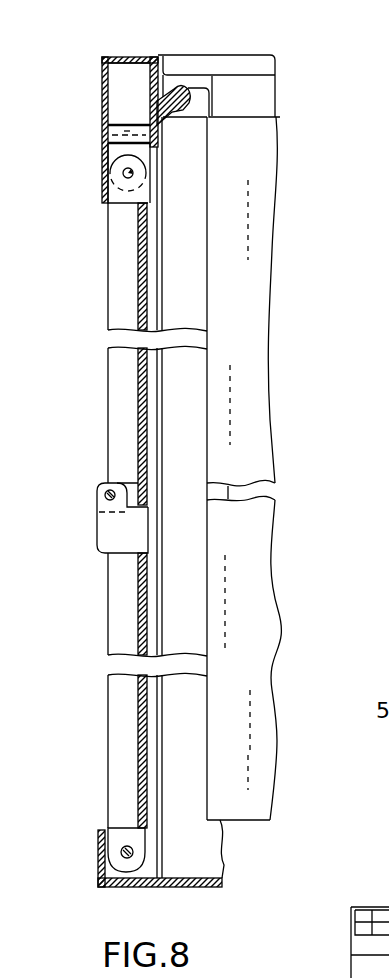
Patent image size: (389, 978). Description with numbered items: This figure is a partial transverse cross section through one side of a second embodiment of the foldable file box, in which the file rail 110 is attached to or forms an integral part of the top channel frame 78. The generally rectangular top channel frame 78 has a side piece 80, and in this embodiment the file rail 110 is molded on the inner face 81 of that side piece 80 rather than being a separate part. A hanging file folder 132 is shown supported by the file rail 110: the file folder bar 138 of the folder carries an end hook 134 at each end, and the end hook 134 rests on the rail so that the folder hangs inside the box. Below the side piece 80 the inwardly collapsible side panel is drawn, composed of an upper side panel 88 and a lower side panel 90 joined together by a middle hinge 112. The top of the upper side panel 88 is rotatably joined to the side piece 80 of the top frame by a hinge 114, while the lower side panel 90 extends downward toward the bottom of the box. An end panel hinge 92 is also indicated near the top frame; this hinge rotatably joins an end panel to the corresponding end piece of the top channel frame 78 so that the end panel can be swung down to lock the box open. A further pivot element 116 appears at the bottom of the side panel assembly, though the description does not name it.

The top channel frame 78 is at (95, 54).
The side piece 80 is at (98, 94).
The inner face 81 is at (169, 61).
The upper side panel 88 is at (136, 395).
The lower side panel 90 is at (140, 622).
The end panel hinge 92 is at (97, 134).
The file rail 110 is at (188, 120).
The middle hinge 112 is at (105, 493).
The hinge 114 is at (125, 176).
The lower pivot block 116 is at (100, 848).
The hanging file folder 132 is at (252, 299).
The end hook 134 is at (211, 68).
The file folder bar 138 is at (262, 106).